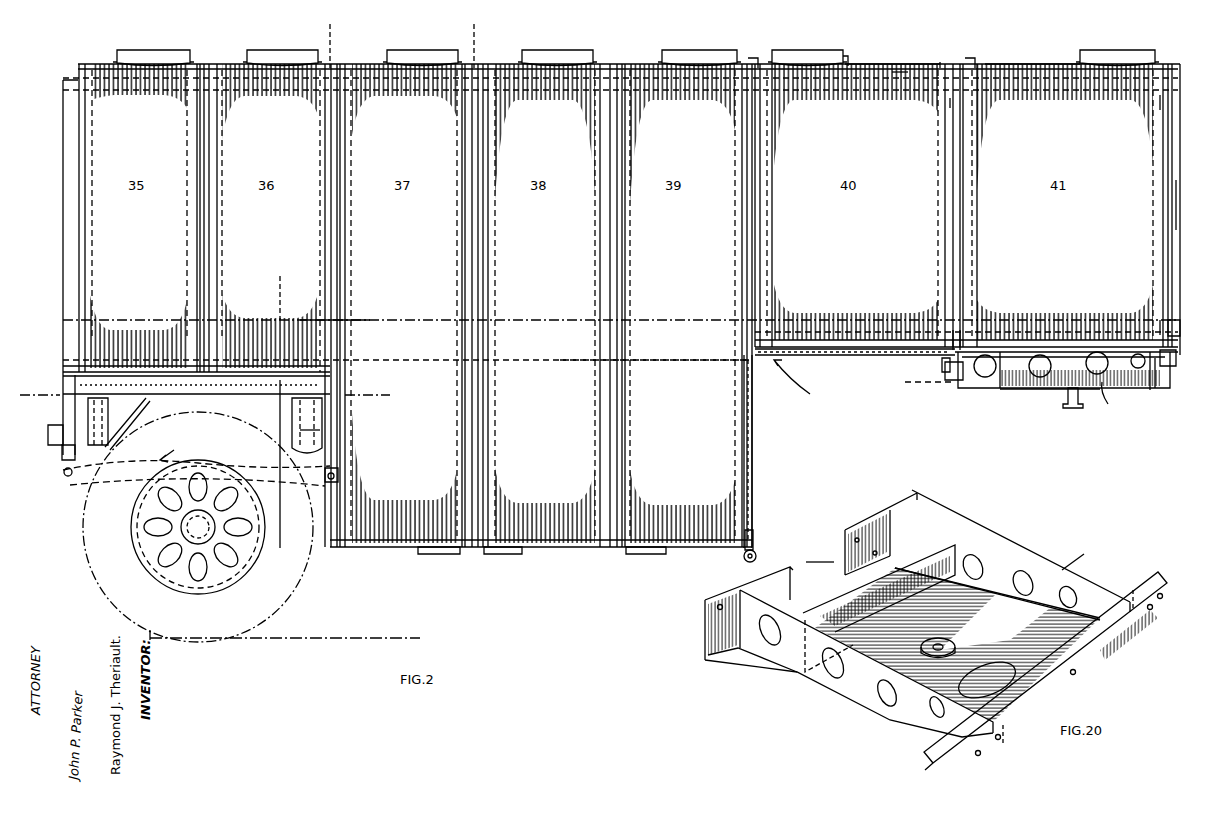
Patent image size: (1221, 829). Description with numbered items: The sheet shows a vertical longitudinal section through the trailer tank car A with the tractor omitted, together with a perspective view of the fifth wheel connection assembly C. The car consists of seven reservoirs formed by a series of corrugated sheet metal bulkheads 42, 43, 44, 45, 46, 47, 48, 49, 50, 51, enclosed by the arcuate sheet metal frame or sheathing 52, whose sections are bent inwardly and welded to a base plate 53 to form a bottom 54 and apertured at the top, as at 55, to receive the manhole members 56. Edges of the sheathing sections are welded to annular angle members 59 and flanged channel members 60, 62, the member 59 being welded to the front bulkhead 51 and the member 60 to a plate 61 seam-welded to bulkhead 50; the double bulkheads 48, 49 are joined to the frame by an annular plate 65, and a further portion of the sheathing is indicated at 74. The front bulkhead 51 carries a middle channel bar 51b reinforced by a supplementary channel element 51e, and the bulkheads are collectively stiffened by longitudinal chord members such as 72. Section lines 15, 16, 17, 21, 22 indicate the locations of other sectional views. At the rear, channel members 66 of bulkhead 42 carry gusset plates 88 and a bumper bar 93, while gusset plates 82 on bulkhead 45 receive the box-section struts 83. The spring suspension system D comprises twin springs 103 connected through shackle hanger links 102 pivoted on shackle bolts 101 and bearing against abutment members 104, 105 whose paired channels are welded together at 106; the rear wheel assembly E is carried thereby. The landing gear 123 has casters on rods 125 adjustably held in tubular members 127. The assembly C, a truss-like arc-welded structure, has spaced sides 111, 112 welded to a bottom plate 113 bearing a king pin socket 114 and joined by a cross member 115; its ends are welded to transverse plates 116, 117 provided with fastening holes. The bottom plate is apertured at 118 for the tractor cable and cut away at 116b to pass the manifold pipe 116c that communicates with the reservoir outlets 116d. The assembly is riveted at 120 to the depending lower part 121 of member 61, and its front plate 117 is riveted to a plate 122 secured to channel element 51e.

In FIG. 2, the section line 15 is at (41, 406).
In FIG. 2, the section line 16 is at (280, 276).
In FIG. 2, the section line 17 is at (311, 312).
In FIG. 2, the section line 21 is at (324, 36).
In FIG. 2, the section line 22 is at (468, 33).
In FIG. 2, the rear bulkhead 42 is at (84, 240).
In FIG. 2, the bulkhead 43 is at (198, 235).
In FIG. 2, the bulkhead 44 is at (321, 235).
In FIG. 2, the bulkhead 45 is at (352, 232).
In FIG. 2, the bulkhead 46 is at (465, 235).
In FIG. 2, the bulkhead 47 is at (603, 235).
In FIG. 2, the bulkhead 48 is at (737, 235).
In FIG. 2, the bulkhead 49 is at (762, 232).
In FIG. 2, the bulkhead 50 is at (947, 240).
In FIG. 2, the front bulkhead 51 is at (1157, 240).
In FIG. 2, the middle channel bar 51b is at (1182, 203).
In FIG. 2, the supplementary channel element 51e is at (1176, 325).
In FIG. 2, the sheet metal frame 52 is at (1046, 60).
In FIG. 2, the base plate 53 is at (862, 356).
In FIG. 2, the bottom 54 is at (892, 356).
In FIG. 2, the aperture 55 is at (852, 60).
In FIG. 2, the manhole member 56 is at (158, 56).
In FIG. 2, the angle member 59 is at (1164, 104).
In FIG. 2, the flanged channel member 60 is at (968, 62).
In FIG. 2, the plate 61 is at (957, 104).
In FIG. 2, the flanged channel member 62 is at (950, 62).
In FIG. 2, the annular plate 65 is at (754, 62).
In FIG. 2, the channel member 66 is at (66, 195).
In FIG. 2, the chord member 72 is at (700, 360).
In FIG. 2, the top strip 74 is at (900, 76).
In FIG. 2, the gusset plate 82 is at (322, 484).
In FIG. 2, the strut 83 is at (226, 392).
In FIG. 2, the gusset plate 88 is at (138, 408).
In FIG. 2, the bumper bar 93 is at (48, 437).
In FIG. 2, the shackle bolt 101 is at (62, 452).
In FIG. 2, the spring shackle hanger link 102 is at (64, 462).
In FIG. 2, the spring assembly 103 is at (118, 494).
In FIG. 2, the abutment member 104 is at (108, 450).
In FIG. 2, the abutment member 105 is at (292, 412).
In FIG. 2, the weld 106 is at (312, 432).
In FIG. 2, the side 111 is at (1022, 380).
In FIG. 20, the side 111 is at (1044, 556).
In FIG. 20, the side 112 is at (846, 686).
In FIG. 2, the bottom plate 113 is at (1042, 388).
In FIG. 20, the bottom plate 113 is at (984, 622).
In FIG. 2, the socket 114 is at (1072, 400).
In FIG. 20, the socket 114 is at (950, 645).
In FIG. 2, the cross member 115 is at (998, 376).
In FIG. 20, the cross member 115 is at (838, 592).
In FIG. 20, the transverse plate 116 is at (710, 612).
In FIG. 20, the cutaway 116b is at (828, 609).
In FIG. 2, the manifold pipe 116c is at (924, 388).
In FIG. 2, the outlet 116d is at (508, 550).
In FIG. 2, the front plate 117 is at (1164, 378).
In FIG. 20, the front plate 117 is at (1078, 672).
In FIG. 20, the aperture 118 is at (998, 668).
In FIG. 2, the rivet 120 is at (946, 378).
In FIG. 2, the lower part 121 is at (958, 332).
In FIG. 2, the plate 122 is at (1160, 364).
In FIG. 2, the landing gear 123 is at (769, 556).
In FIG. 2, the rod 125 is at (757, 540).
In FIG. 2, the tubular member 127 is at (756, 466).
In FIG. 2, the trailer tank car A is at (793, 386).
In FIG. 2, the fifth wheel connection assembly C is at (1066, 387).
In FIG. 20, the fifth wheel connection assembly C is at (1078, 555).
In FIG. 2, the spring suspension system D is at (172, 449).
In FIG. 2, the rear wheel assembly E is at (296, 612).